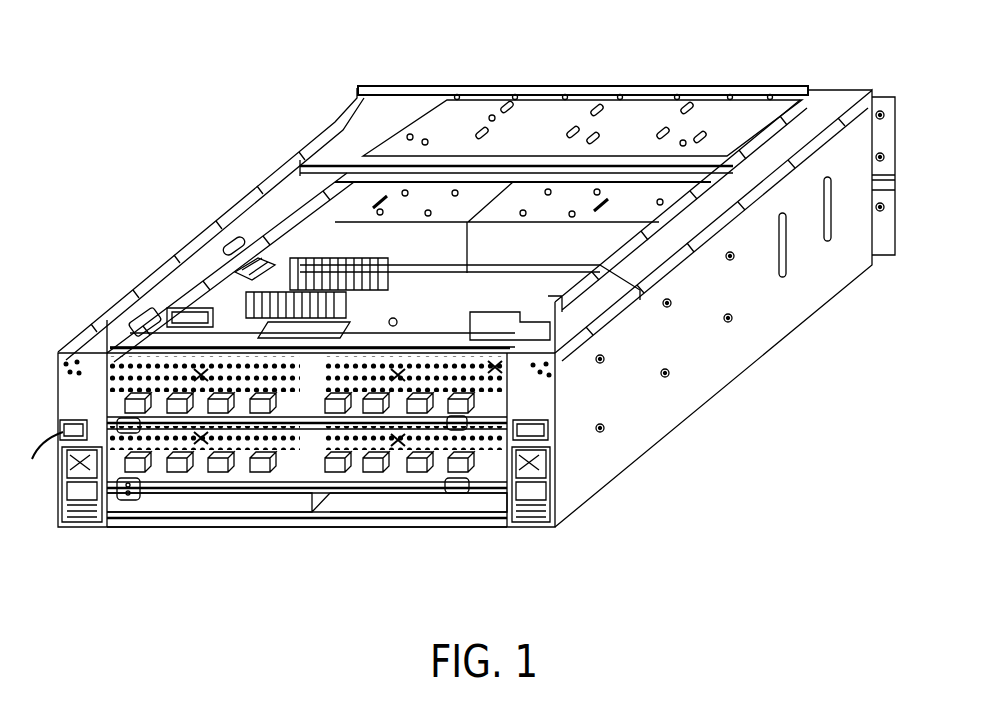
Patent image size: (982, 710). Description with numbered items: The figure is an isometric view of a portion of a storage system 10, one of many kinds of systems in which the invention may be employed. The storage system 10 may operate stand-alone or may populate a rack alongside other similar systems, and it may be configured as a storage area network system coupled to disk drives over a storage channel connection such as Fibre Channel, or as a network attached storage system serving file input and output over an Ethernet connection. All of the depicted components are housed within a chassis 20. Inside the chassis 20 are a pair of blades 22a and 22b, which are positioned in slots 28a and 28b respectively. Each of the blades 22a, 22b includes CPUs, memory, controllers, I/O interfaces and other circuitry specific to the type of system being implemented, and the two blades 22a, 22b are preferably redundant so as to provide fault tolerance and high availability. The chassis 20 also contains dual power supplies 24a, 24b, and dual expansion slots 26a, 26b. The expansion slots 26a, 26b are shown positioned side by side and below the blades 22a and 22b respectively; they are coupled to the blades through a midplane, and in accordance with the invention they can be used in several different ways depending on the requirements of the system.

The storage system 10 is at (450, 297).
The chassis 20 is at (463, 306).
The blade 22a is at (427, 298).
The blade 22b is at (296, 458).
The power supply 24a is at (277, 200).
The power supply 24b is at (740, 173).
The expansion slot 26a is at (248, 497).
The expansion slot 26b is at (413, 498).
The slot 28a is at (110, 383).
The slot 28b is at (141, 440).